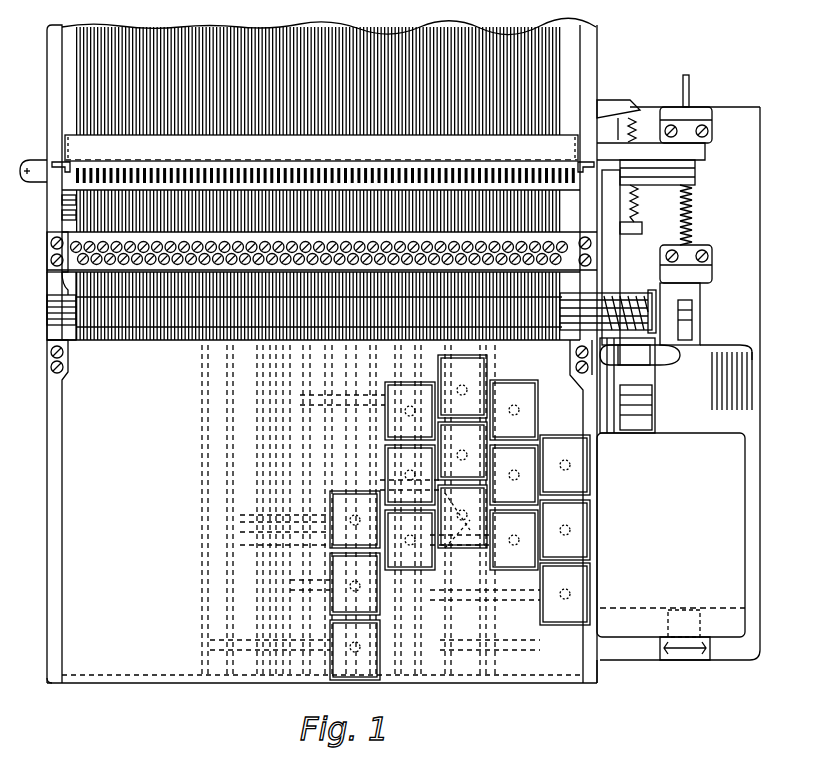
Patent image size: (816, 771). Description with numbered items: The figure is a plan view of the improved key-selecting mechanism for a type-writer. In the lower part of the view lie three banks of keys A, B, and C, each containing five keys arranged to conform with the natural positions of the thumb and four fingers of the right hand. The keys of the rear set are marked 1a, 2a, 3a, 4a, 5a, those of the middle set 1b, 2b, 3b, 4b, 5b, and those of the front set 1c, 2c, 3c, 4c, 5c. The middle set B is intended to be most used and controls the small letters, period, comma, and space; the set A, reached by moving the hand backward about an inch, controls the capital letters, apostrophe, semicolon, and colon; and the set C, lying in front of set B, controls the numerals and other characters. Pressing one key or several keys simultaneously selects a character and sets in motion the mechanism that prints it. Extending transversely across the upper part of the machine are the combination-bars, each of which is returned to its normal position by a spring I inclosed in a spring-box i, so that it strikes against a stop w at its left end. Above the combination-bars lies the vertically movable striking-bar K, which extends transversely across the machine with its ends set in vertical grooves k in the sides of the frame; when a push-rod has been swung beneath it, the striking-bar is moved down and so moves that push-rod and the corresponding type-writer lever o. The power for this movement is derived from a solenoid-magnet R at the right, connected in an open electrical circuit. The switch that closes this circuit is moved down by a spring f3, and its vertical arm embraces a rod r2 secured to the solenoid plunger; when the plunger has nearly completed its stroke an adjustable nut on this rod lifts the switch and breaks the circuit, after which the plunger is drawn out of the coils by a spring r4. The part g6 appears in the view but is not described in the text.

The striking-bar K is at (323, 153).
The vertical grooves k is at (588, 152).
The type-writer levers o is at (556, 84).
The guide g6 is at (80, 213).
The stop w is at (46, 295).
The spring f3 is at (638, 210).
The rod r2 is at (693, 212).
The spring r4 is at (693, 228).
The spring-box i is at (630, 293).
The spring I is at (652, 290).
The solenoid-magnet R is at (676, 385).
The bank of keys A is at (580, 595).
The bank of keys B is at (580, 542).
The bank of keys C is at (578, 487).
The key 1a is at (355, 650).
The key 1b is at (355, 584).
The key 1c is at (355, 519).
The key 2a is at (410, 540).
The key 2b is at (410, 475).
The key 2c is at (410, 411).
The key 3a is at (462, 516).
The key 3b is at (462, 451).
The key 3c is at (462, 386).
The key 4a is at (514, 540).
The key 4b is at (514, 475).
The key 4c is at (514, 410).
The key 5a is at (565, 594).
The key 5b is at (565, 530).
The key 5c is at (565, 465).